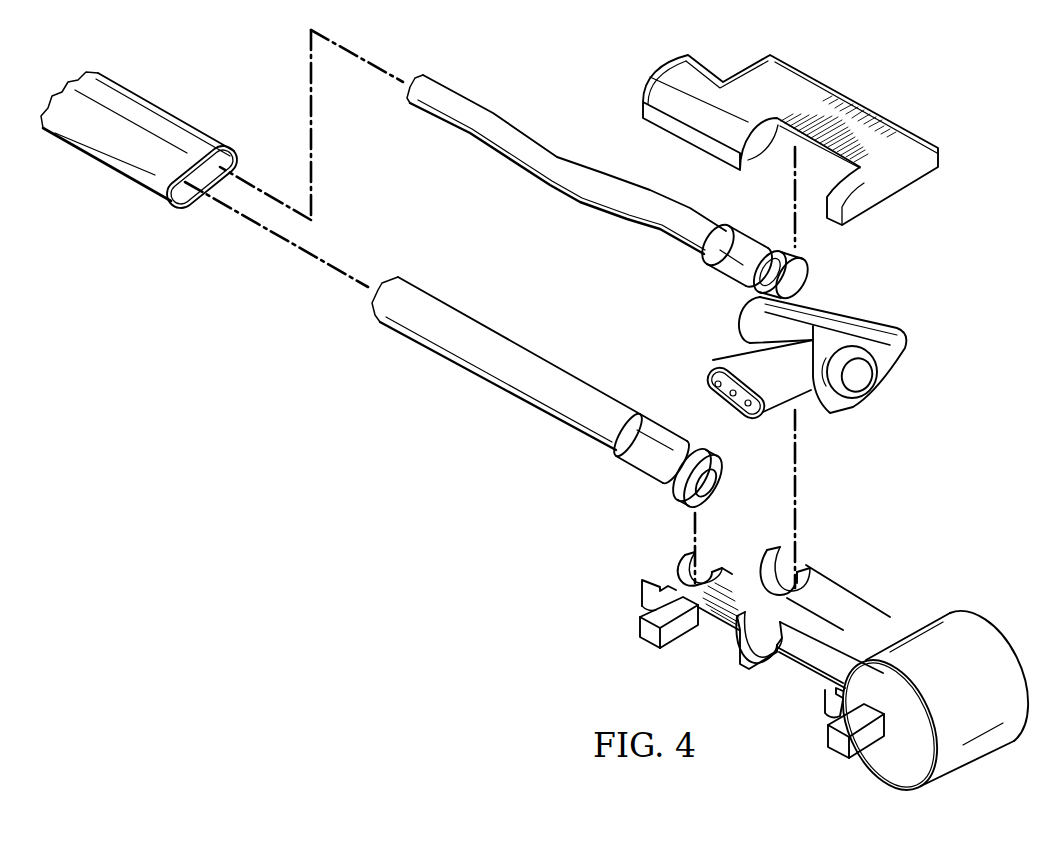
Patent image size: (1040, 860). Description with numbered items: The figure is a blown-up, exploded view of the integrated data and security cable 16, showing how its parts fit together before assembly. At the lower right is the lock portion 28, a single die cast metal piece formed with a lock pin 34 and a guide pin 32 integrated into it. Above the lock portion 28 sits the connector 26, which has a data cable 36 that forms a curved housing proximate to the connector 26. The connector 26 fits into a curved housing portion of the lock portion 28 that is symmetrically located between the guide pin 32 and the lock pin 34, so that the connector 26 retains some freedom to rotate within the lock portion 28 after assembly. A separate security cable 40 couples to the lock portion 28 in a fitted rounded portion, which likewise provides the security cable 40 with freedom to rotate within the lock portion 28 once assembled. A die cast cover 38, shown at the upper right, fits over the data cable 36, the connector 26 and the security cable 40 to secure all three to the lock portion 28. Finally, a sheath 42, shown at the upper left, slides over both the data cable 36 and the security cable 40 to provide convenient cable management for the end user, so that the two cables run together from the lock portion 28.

The integrated data and security cable 16 is at (928, 68).
The connector 26 is at (728, 357).
The lock portion 28 is at (982, 757).
The guide pin 32 is at (650, 638).
The lock pin 34 is at (837, 746).
The data cable 36 is at (553, 190).
The die cast cover 38 is at (800, 82).
The security cable 40 is at (500, 398).
The sheath 42 is at (143, 108).